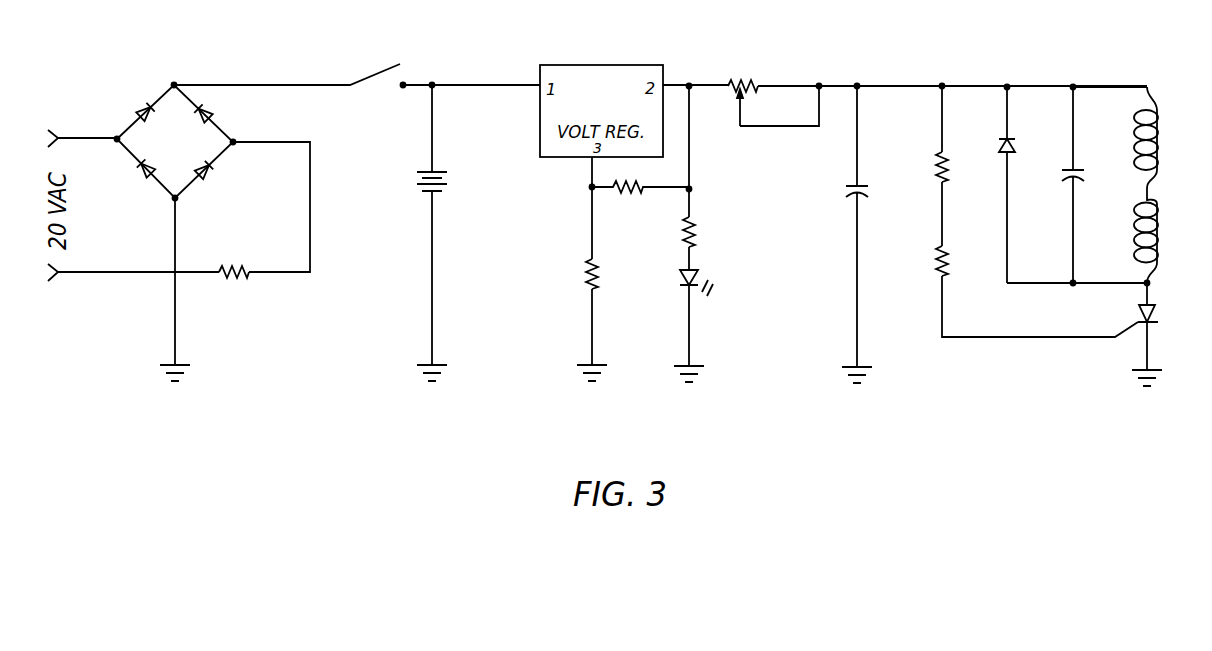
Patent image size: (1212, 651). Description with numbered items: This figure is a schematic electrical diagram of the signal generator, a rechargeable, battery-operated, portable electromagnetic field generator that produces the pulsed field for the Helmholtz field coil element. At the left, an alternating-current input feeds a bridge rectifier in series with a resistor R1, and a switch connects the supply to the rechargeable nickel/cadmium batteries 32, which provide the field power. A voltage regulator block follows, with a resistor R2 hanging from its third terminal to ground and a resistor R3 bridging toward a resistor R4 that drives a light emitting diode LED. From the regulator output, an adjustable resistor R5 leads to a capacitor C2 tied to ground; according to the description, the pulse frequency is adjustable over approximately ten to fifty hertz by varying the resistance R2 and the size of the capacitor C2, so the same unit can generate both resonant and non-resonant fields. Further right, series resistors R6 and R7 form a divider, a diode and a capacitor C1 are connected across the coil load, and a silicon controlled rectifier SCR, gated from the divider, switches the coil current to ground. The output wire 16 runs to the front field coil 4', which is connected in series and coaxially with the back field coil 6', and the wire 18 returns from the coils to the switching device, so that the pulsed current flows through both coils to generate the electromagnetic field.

The nickel/cadmium batteries 32 is at (443, 189).
The wire 16 is at (1105, 86).
The field coil 4' is at (1165, 137).
The field coil 6' is at (1165, 233).
The wire 18 is at (1152, 277).
The resistor R1 is at (234, 258).
The resistance R2 is at (609, 274).
The resistor R3 is at (640, 201).
The resistor R4 is at (705, 232).
The potentiometer R5 is at (775, 90).
The resistor R6 is at (958, 167).
The resistor R7 is at (958, 261).
The capacitor C1 is at (1084, 185).
The capacitor C2 is at (842, 234).
The light emitting diode LED is at (715, 325).
The silicon controlled rectifier SCR is at (1167, 334).